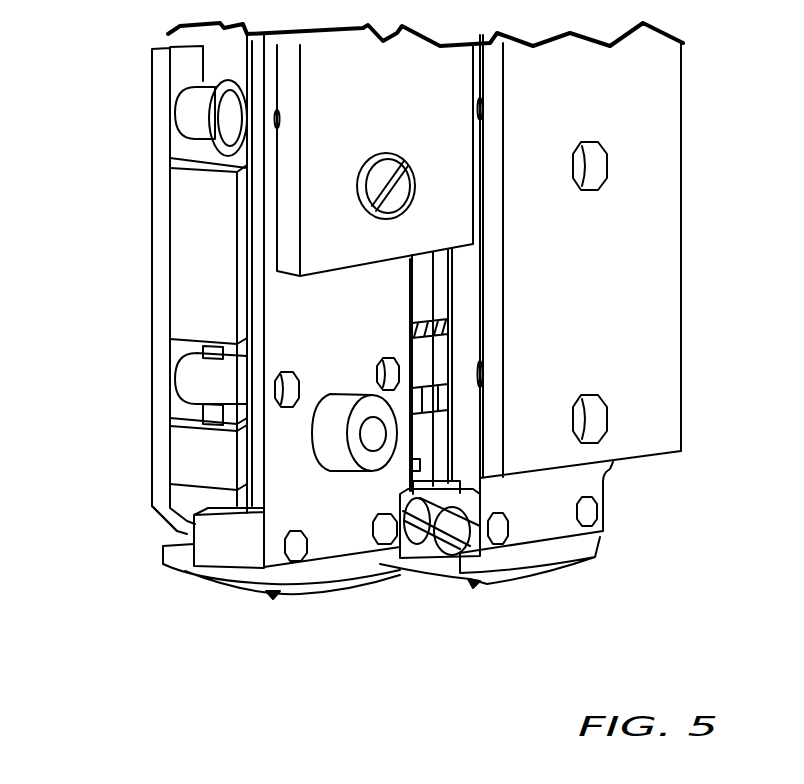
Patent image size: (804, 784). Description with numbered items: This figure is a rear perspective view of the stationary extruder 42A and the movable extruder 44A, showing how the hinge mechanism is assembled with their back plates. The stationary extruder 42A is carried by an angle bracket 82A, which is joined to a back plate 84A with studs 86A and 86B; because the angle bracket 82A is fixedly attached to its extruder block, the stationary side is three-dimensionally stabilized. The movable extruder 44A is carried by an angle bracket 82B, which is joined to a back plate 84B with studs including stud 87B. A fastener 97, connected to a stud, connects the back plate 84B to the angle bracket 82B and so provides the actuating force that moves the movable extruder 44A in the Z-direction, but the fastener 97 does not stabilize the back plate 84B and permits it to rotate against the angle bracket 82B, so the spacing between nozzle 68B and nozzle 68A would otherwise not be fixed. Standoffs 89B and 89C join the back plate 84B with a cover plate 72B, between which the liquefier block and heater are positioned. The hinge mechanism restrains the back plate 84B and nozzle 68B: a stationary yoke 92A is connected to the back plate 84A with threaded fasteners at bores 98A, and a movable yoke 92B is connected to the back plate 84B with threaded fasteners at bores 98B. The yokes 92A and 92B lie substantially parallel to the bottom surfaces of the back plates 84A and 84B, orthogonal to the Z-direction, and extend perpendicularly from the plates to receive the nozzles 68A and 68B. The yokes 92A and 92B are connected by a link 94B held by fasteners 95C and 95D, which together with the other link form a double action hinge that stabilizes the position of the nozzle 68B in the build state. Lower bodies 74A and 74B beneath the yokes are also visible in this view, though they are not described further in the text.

The stationary extruder 42A is at (623, 490).
The movable extruder 44A is at (165, 548).
The nozzle 68A is at (483, 587).
The nozzle 68B is at (270, 610).
The cover plate 72B is at (152, 236).
The base plate 74A is at (560, 553).
The base plate 74B is at (343, 580).
The angle bracket 82A is at (580, 256).
The angle bracket 82B is at (374, 160).
The back plate 84A is at (524, 515).
The back plate 84B is at (337, 413).
The stud 86A is at (607, 162).
The stud 86B is at (600, 413).
The stud 87B is at (340, 412).
The standoff 89B is at (178, 91).
The standoff 89C is at (187, 378).
The stationary yoke 92A is at (450, 490).
The movable yoke 92B is at (230, 548).
The link 94B is at (433, 543).
The fastener 95C is at (420, 547).
The fastener 95D is at (457, 543).
The fastener 97 is at (362, 190).
The bores 98A is at (592, 520).
The bores 98B is at (304, 560).